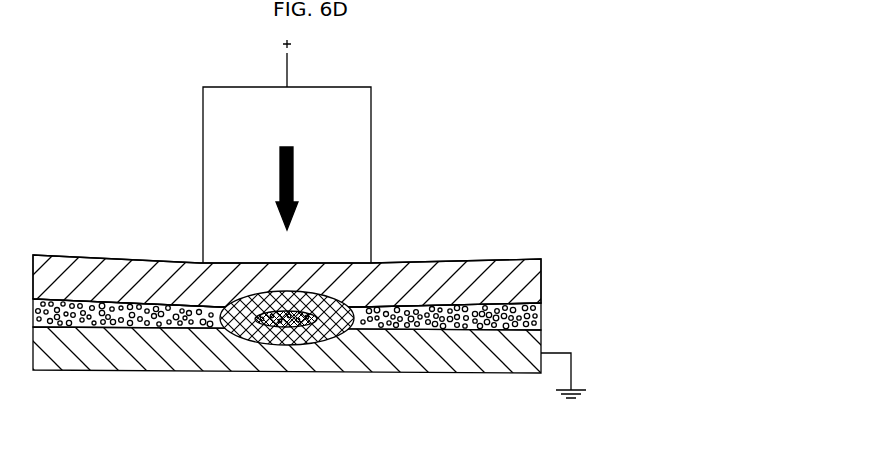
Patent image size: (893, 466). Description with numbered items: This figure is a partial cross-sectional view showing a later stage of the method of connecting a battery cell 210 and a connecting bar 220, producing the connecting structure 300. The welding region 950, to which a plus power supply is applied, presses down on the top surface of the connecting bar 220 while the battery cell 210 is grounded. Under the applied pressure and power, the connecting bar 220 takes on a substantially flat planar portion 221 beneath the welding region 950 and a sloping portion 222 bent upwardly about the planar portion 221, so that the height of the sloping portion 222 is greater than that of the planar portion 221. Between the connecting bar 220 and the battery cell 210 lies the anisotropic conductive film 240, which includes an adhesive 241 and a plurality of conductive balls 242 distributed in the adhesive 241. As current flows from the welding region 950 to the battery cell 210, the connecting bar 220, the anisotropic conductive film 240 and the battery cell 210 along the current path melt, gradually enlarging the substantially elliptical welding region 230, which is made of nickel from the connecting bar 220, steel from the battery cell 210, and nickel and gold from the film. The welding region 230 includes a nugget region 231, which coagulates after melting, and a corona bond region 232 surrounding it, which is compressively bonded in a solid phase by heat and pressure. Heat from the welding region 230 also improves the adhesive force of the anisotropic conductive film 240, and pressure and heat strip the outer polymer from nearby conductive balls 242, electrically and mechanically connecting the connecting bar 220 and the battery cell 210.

The welding region 950 is at (369, 132).
The connecting structure 300 is at (310, 303).
The connecting bar 220 is at (287, 235).
The planar portion 221 is at (313, 263).
The sloping portion 222 is at (390, 193).
The anisotropic conductive film 240 is at (287, 380).
The adhesive 241 is at (135, 327).
The conductive balls 242 is at (173, 322).
The welding region 230 is at (287, 376).
The nugget region 231 is at (280, 330).
The corona bond region 232 is at (322, 345).
The battery cell 210 is at (412, 357).